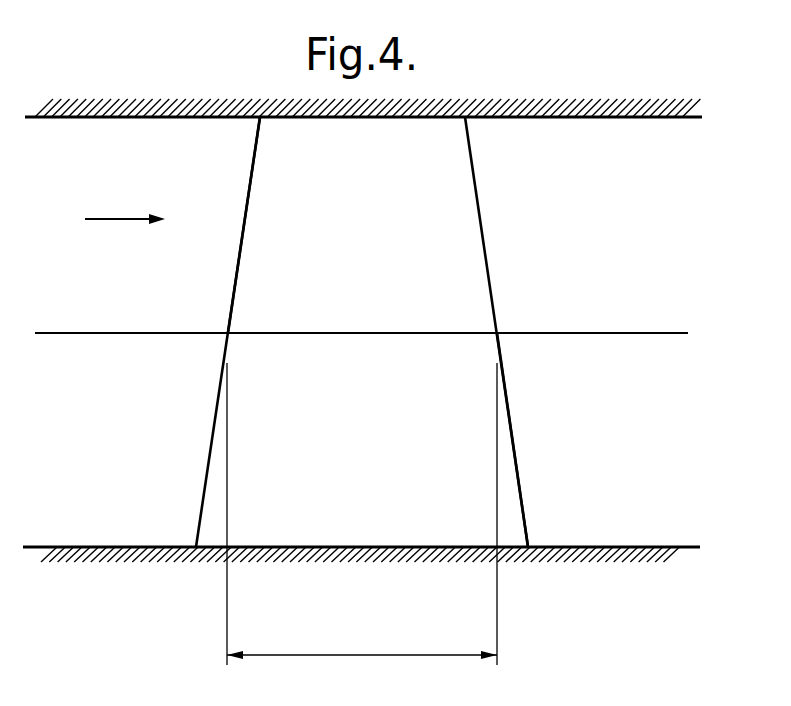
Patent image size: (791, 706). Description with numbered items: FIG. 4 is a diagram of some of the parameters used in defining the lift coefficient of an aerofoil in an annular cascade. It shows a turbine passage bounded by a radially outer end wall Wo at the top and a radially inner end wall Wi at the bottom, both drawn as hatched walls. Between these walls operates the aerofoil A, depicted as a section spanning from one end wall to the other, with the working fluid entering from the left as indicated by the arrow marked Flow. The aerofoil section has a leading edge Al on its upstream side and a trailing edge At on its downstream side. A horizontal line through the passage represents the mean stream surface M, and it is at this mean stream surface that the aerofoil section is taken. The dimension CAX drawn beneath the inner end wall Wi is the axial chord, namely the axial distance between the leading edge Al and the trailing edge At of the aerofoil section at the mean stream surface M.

The radially outer end wall Wo is at (592, 117).
The radially inner end wall Wi is at (95, 545).
The aerofoil A is at (455, 206).
The airfoil leading edge Al is at (232, 297).
The airfoil trailing edge At is at (512, 443).
The mid-span (mean) line of the passage M is at (62, 335).
The axial chord CAX is at (362, 531).
The flow direction arrow Flow is at (125, 207).